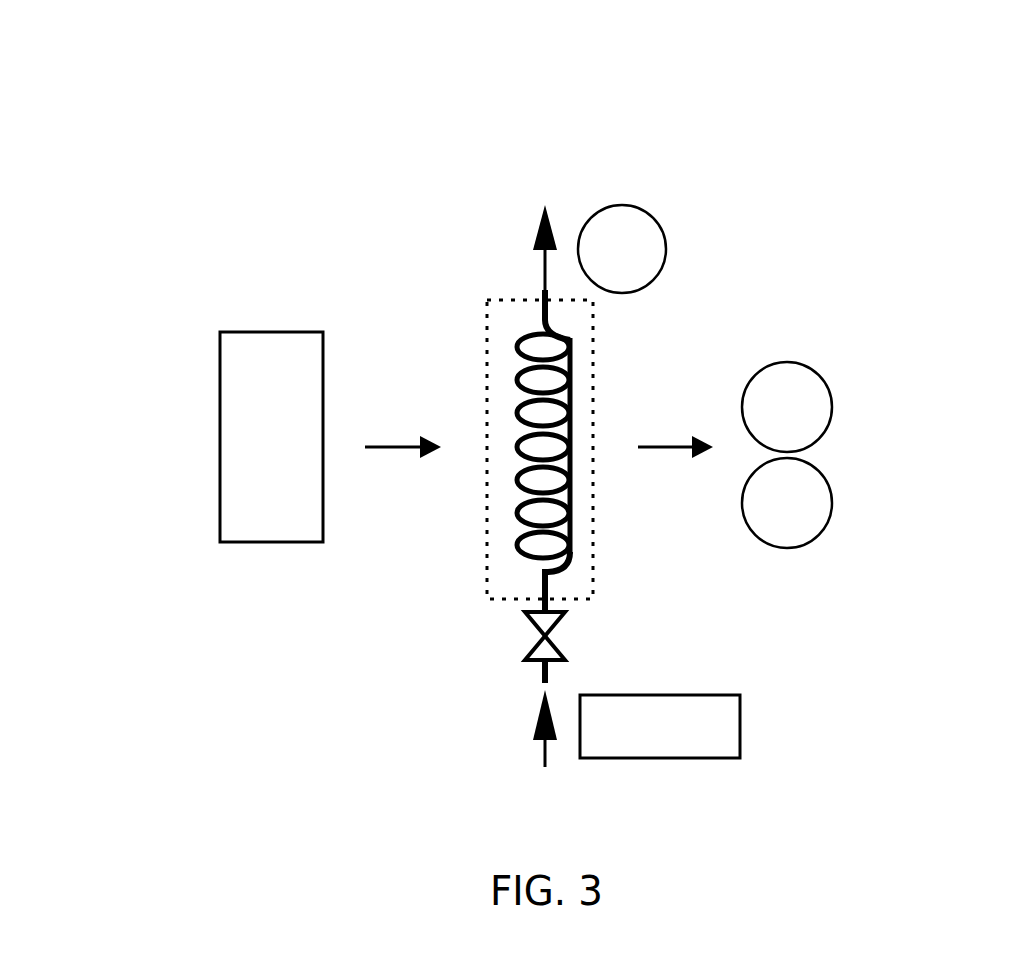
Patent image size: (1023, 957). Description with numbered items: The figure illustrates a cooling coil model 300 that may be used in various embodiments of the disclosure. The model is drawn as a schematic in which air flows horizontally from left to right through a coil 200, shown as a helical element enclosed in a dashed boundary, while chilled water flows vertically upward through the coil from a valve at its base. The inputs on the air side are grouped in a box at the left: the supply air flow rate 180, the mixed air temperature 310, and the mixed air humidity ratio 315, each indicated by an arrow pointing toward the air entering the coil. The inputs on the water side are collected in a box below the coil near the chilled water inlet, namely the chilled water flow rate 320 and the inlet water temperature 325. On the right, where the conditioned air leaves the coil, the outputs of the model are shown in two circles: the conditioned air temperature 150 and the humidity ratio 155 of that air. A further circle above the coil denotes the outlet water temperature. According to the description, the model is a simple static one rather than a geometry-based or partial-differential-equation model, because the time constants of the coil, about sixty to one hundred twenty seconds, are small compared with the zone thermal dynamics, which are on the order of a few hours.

The cooling coil model 300 is at (752, 142).
The mixed air temperature 310 is at (186, 371).
The mixed air humidity ratio 315 is at (186, 438).
The supply air flow rate 180 is at (186, 507).
The conditioned air temperature 150 is at (870, 405).
The humidity ratio 155 is at (870, 505).
The cooling coil 200 is at (452, 448).
The chilled water flow rate 320 is at (637, 790).
The inlet water temperature 325 is at (705, 790).